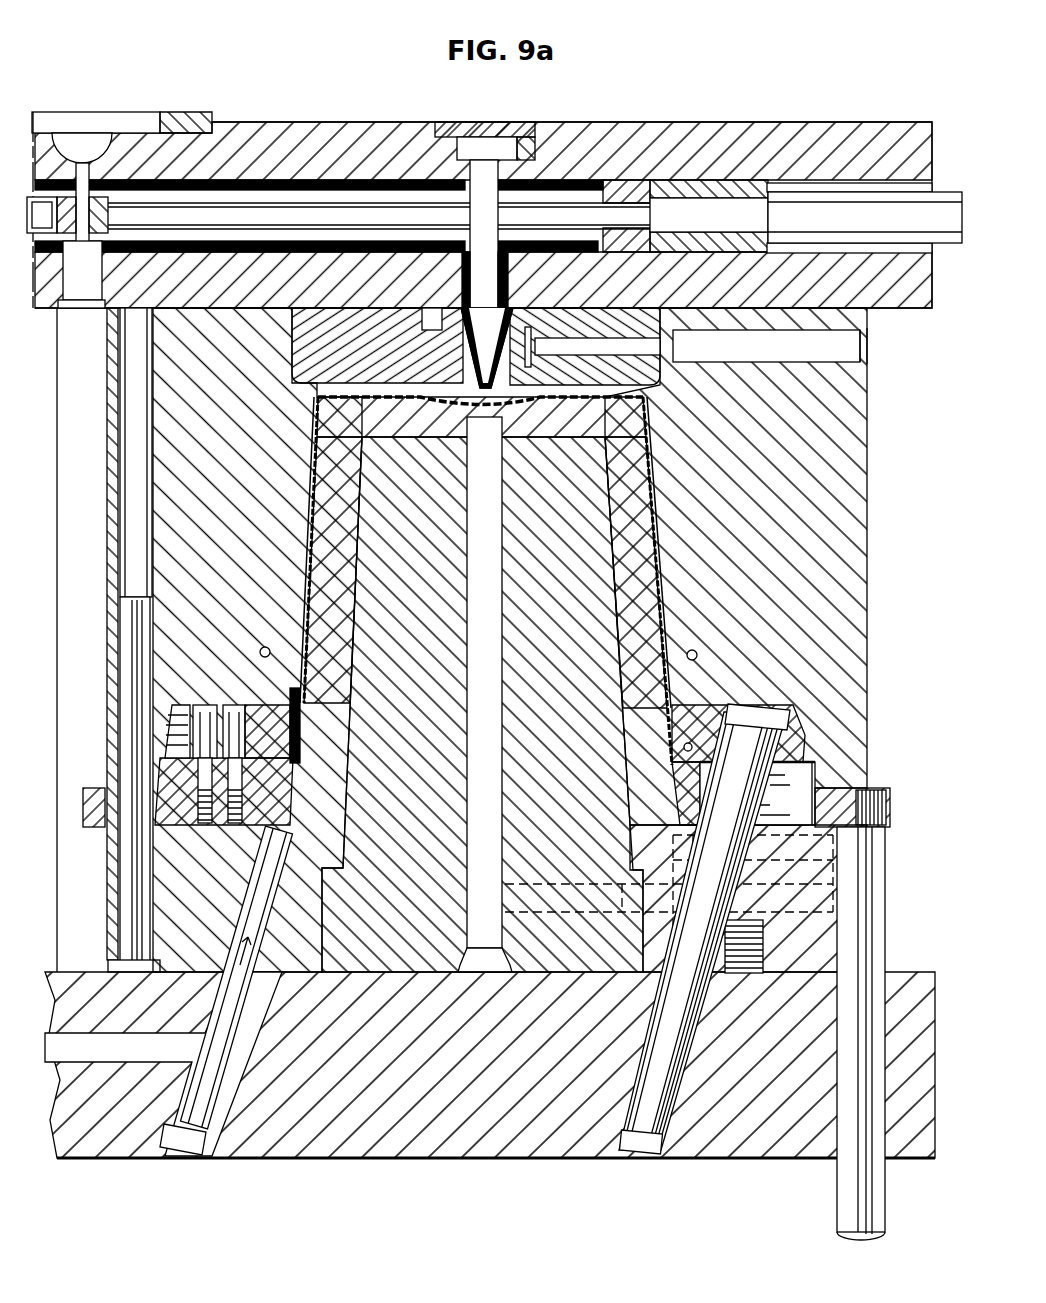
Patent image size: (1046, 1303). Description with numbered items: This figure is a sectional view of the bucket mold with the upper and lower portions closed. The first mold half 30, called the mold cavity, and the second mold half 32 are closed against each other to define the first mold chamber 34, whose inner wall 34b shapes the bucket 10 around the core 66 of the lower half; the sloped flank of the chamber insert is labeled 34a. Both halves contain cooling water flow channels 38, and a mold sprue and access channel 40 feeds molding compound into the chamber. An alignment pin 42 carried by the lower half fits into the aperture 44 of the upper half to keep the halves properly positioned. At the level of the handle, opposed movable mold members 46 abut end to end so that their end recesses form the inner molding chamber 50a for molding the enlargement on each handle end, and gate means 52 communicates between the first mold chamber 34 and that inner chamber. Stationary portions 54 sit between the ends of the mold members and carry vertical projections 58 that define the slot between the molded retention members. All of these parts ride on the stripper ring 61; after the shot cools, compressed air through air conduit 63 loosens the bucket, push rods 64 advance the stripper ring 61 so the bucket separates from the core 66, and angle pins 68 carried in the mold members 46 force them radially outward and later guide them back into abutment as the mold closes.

The bucket 10 is at (797, 800).
The first mold half 30 is at (221, 450).
The second mold half 32 is at (424, 1072).
The first mold chamber 34 is at (318, 580).
The outer surface of insert 34a is at (660, 573).
The inner wall of mold chamber 34b is at (577, 403).
The cooling water flow channels 38 is at (779, 362).
The mold sprue and access channel 40 is at (522, 307).
The alignment pin 42 is at (152, 622).
The aperture 44 is at (135, 500).
The movable mold members 46 is at (725, 705).
The inner molding chamber 50a is at (300, 690).
The gate means 52 is at (245, 702).
The stationary portions 54 is at (268, 765).
The vertical projections 58 is at (300, 756).
The stripper ring 61 is at (165, 825).
The air conduit 63 is at (206, 1058).
The push rods 64 is at (858, 918).
The core 66 is at (565, 664).
The angle pins 68 is at (672, 1038).